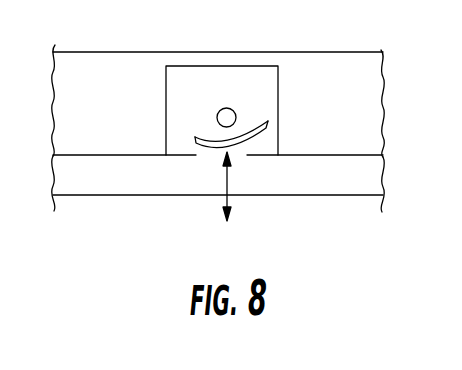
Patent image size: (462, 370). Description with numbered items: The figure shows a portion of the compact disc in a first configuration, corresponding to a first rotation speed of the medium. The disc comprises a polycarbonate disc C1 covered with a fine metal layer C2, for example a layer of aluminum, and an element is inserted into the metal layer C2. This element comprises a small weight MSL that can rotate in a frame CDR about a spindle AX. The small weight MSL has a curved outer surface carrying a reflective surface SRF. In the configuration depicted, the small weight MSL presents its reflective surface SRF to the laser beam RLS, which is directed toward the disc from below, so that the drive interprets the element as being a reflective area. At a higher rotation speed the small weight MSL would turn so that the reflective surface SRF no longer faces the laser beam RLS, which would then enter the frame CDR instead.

The spindle AX is at (226, 115).
The frame CDR is at (267, 65).
The small weight MSL is at (256, 119).
The reflective surface SRF is at (262, 132).
The polycarbonate disc C1 is at (379, 170).
The metal layer C2 is at (379, 110).
The laser beam RLS is at (225, 186).